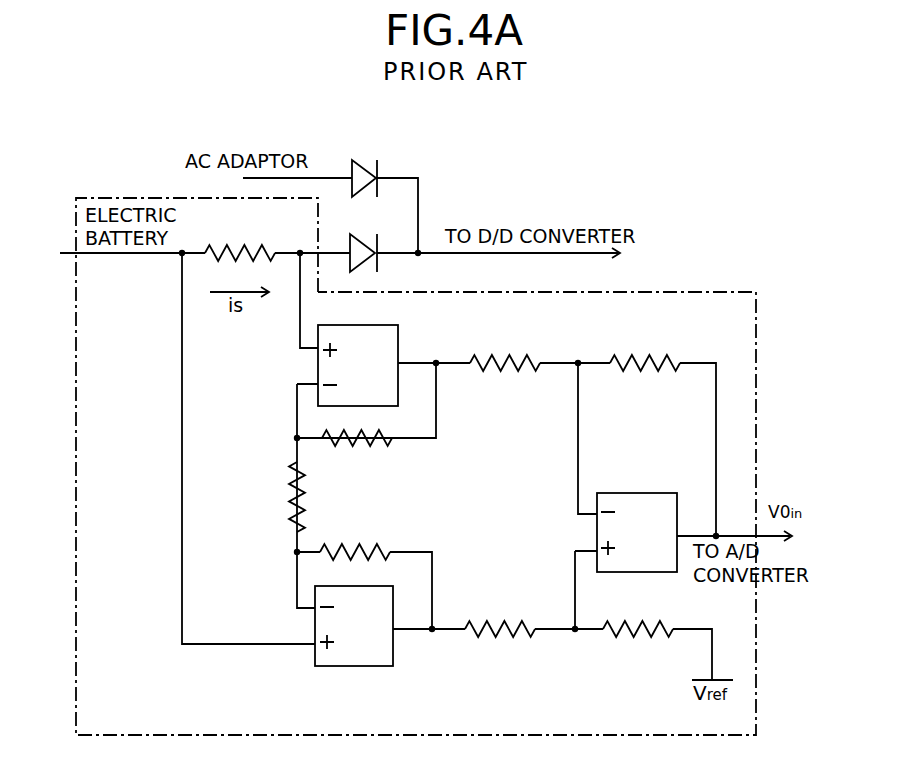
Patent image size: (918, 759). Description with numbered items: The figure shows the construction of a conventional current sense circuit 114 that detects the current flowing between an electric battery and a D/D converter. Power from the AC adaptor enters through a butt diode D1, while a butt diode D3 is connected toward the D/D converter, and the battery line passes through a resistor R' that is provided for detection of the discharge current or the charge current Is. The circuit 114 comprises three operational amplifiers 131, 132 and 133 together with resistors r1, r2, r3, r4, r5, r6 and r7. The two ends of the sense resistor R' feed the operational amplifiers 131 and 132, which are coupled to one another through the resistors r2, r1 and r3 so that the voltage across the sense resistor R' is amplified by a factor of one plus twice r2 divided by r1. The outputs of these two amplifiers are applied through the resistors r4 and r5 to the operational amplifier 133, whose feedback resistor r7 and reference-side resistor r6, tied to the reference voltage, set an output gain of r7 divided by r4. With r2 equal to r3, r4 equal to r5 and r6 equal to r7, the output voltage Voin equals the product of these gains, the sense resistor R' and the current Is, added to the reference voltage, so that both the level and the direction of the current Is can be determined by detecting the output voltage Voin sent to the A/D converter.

The current sense circuit 114 is at (684, 292).
The butt diode D1 is at (362, 160).
The butt diode D3 is at (362, 237).
The resistor R' is at (240, 237).
The operational amplifier 131 is at (358, 325).
The operational amplifier 132 is at (355, 667).
The operational amplifier 133 is at (638, 493).
The resistor r1 is at (311, 497).
The resistor r2 is at (357, 449).
The resistor r3 is at (355, 540).
The resistor r4 is at (505, 374).
The resistor r5 is at (500, 638).
The resistor r6 is at (638, 638).
The resistor r7 is at (645, 374).